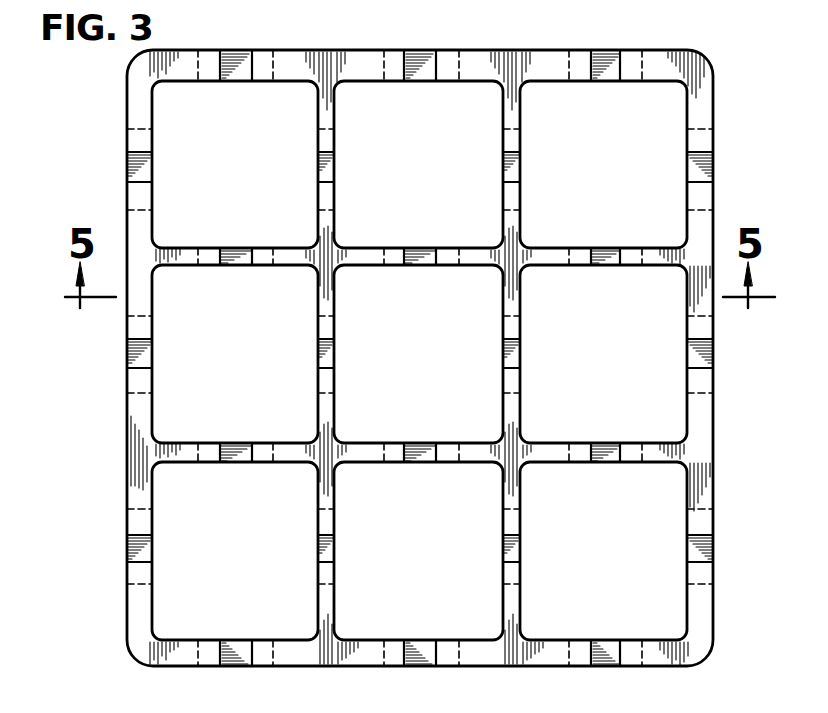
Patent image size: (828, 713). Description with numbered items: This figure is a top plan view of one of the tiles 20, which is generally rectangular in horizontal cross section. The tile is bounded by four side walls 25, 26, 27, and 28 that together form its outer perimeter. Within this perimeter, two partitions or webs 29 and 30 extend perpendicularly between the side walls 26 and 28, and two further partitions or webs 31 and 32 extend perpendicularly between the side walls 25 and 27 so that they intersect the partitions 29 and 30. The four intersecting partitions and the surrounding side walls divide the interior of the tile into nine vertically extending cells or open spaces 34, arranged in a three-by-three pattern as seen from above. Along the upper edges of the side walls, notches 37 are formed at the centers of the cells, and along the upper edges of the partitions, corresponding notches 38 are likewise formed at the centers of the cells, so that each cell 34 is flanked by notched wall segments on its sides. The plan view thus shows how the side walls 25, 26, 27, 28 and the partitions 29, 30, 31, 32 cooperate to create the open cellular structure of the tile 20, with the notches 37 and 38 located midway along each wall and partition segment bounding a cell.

The tile 20 is at (127, 420).
The side wall 25 is at (500, 667).
The side wall 26 is at (127, 535).
The side wall 27 is at (355, 52).
The side wall 28 is at (712, 482).
The partition 29 is at (552, 458).
The partition 30 is at (568, 266).
The partition 31 is at (517, 192).
The partition 32 is at (335, 183).
The cell 34 is at (419, 360).
The notch 37 is at (449, 346).
The notch 38 is at (420, 356).